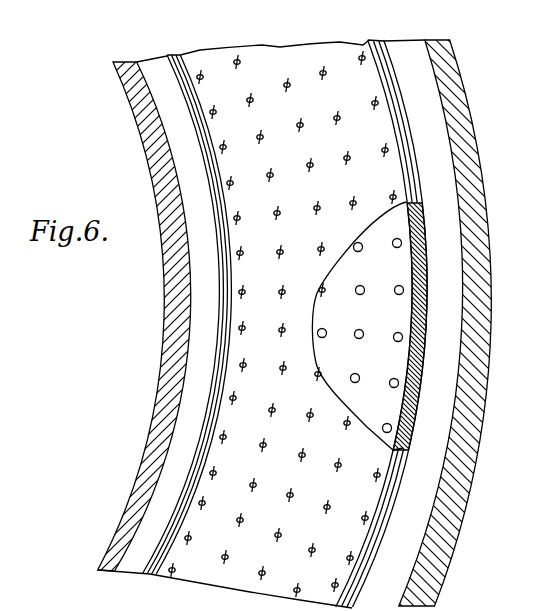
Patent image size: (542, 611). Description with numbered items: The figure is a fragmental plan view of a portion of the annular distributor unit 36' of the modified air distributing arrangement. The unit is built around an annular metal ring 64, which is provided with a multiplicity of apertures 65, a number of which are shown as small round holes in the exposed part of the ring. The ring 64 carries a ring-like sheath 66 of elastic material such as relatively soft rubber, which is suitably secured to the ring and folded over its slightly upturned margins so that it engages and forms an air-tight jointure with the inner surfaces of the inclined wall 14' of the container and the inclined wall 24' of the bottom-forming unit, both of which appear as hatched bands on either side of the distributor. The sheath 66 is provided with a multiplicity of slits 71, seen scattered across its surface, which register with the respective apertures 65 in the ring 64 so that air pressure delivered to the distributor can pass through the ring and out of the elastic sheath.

The inclined wall 14' is at (459, 323).
The inclined wall 24' is at (144, 316).
The annular distributor unit 36' is at (422, 323).
The annular metal ring 64 is at (405, 317).
The apertures 65 is at (397, 287).
The sheath 66 is at (420, 241).
The slits 71 is at (238, 250).